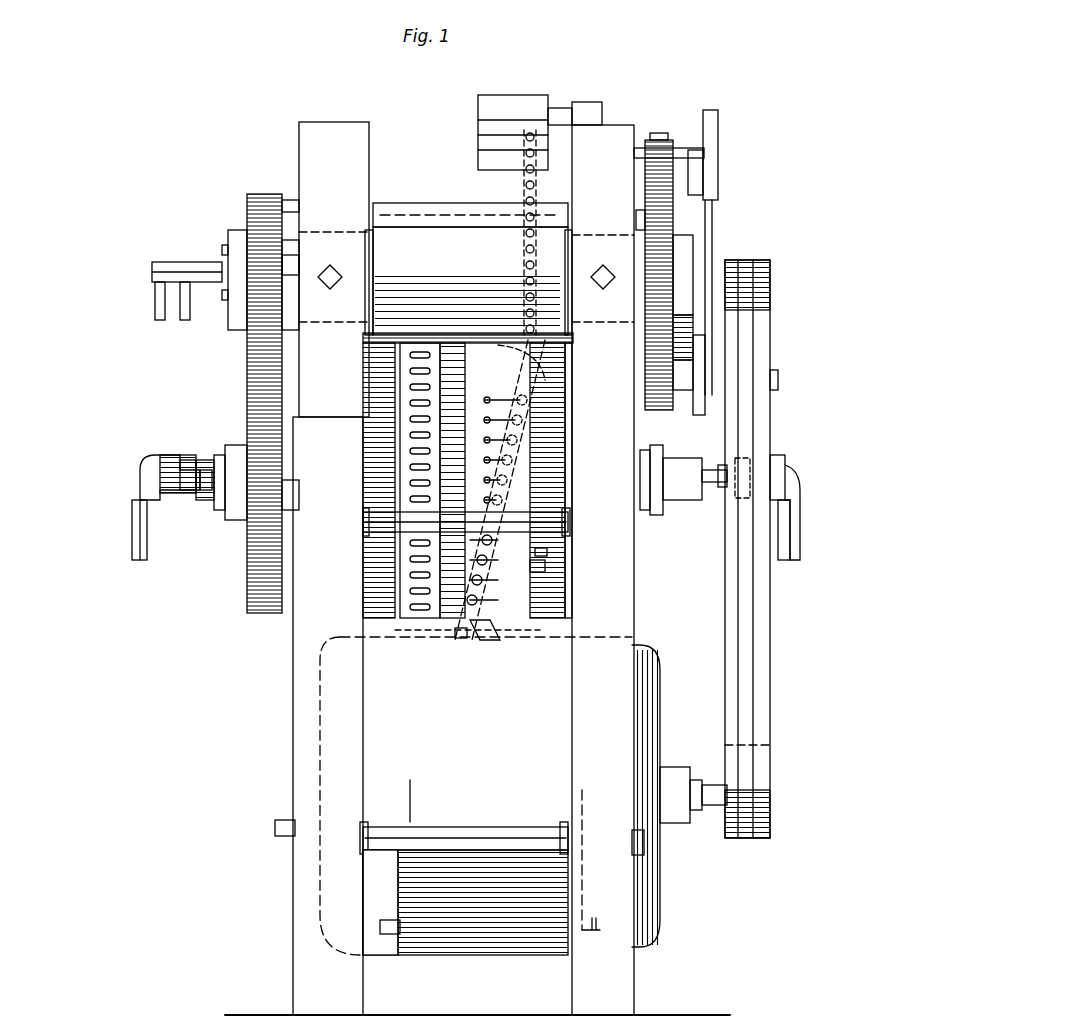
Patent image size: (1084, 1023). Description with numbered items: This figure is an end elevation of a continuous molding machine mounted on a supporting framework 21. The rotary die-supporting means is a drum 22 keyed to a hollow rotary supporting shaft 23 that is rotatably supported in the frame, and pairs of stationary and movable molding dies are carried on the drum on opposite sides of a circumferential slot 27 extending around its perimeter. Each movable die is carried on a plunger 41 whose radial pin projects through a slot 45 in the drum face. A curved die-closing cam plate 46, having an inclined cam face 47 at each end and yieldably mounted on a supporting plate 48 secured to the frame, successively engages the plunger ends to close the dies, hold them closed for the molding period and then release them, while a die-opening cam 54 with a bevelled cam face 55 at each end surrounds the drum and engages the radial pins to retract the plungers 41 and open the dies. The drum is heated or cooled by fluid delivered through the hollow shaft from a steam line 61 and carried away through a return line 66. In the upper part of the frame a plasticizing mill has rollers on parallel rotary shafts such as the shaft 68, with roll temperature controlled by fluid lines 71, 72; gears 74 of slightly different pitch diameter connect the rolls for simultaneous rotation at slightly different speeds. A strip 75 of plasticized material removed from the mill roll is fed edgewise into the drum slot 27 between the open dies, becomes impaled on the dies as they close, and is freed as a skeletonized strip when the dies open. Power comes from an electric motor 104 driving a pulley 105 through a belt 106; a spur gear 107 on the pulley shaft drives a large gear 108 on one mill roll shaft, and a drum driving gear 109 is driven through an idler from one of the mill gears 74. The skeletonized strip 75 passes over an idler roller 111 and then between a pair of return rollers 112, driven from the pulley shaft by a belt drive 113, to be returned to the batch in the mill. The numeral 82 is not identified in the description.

The supporting framework 21 is at (298, 657).
The drum 22 is at (365, 592).
The hollow rotary supporting shaft 23 is at (678, 492).
The circumferential slot 27 is at (450, 340).
The plunger 41 is at (462, 340).
The slot 45 is at (505, 446).
The die-closing cam plate 46 is at (540, 495).
The inclined cam face 47 is at (548, 390).
The supporting plate 48 is at (560, 572).
The die-opening cam 54 is at (488, 340).
The bevelled cam face 55 is at (486, 642).
The steam line 61 is at (148, 552).
The return line 66 is at (412, 240).
The rotary shaft 68 is at (296, 265).
The fluid line 71 is at (157, 320).
The fluid line 72 is at (185, 320).
The gears 74 is at (262, 200).
The strip 75 is at (521, 190).
The drum 82 is at (375, 392).
The electric motor 104 is at (655, 880).
The pulley 105 is at (772, 342).
The belt 106 is at (760, 690).
The spur gear 107 is at (662, 400).
The large gear 108 is at (672, 212).
The drum driving gear 109 is at (246, 600).
The idler roller 111 is at (537, 650).
The return rollers 112 is at (482, 160).
The belt drive 113 is at (710, 243).